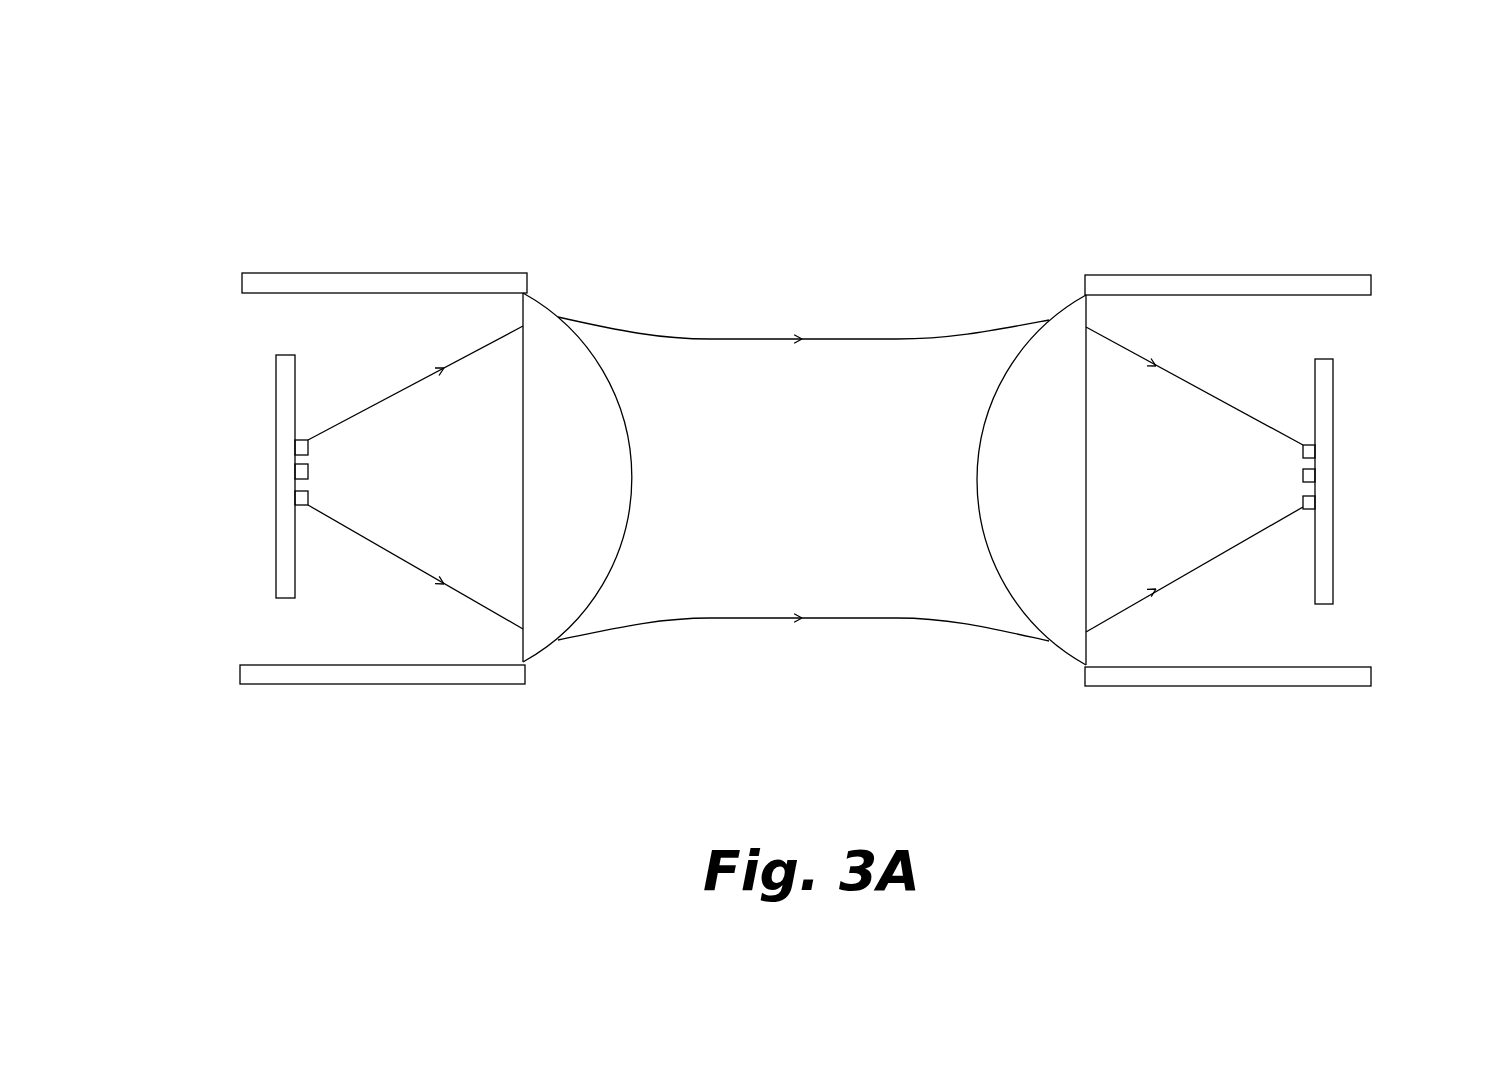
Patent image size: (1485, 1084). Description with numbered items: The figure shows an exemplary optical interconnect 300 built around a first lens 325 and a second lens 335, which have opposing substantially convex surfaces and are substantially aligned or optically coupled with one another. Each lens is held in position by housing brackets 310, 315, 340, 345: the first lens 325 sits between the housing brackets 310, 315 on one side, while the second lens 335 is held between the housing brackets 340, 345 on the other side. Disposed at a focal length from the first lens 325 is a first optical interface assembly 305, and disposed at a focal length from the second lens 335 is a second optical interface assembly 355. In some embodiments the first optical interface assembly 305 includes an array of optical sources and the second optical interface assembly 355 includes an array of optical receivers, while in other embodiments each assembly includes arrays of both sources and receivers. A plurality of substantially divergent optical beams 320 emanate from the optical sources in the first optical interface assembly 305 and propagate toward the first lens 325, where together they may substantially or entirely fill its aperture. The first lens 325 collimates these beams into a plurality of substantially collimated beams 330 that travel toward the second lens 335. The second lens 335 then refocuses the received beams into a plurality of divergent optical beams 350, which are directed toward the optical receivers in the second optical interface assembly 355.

The optical interconnect 300 is at (205, 193).
The first optical interface assembly 305 is at (268, 482).
The housing bracket 310 is at (327, 278).
The housing bracket 315 is at (352, 673).
The substantially divergent optical beams 320 is at (415, 345).
The first lens 325 is at (538, 302).
The substantially collimated beams 330 is at (835, 288).
The second lens 335 is at (1080, 285).
The housing bracket 340 is at (1205, 279).
The housing bracket 345 is at (1232, 671).
The divergent optical beams 350 is at (1195, 342).
The second optical interface assembly 355 is at (1344, 523).